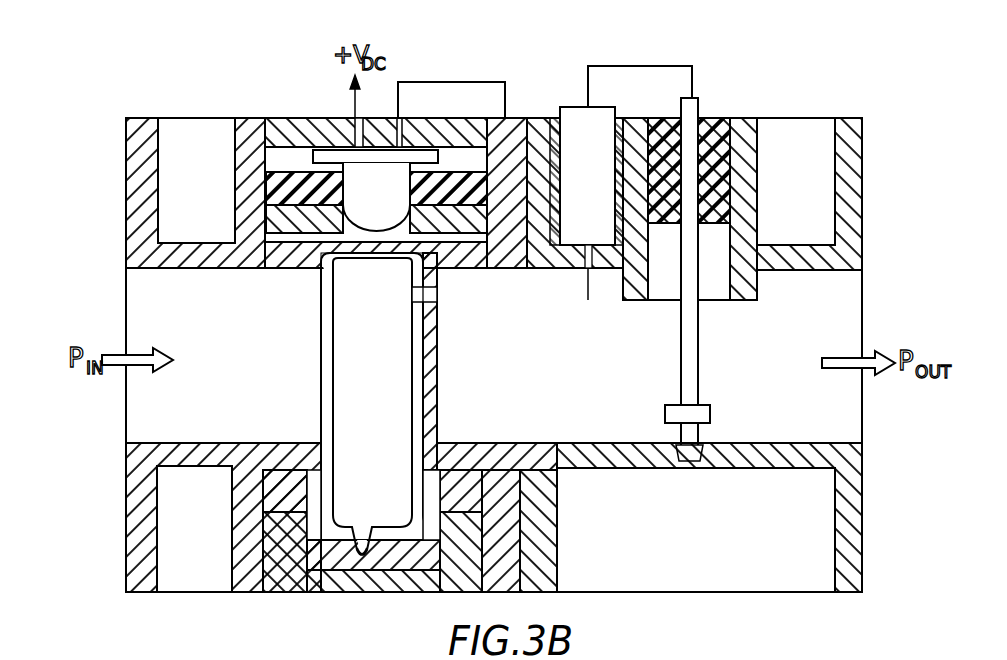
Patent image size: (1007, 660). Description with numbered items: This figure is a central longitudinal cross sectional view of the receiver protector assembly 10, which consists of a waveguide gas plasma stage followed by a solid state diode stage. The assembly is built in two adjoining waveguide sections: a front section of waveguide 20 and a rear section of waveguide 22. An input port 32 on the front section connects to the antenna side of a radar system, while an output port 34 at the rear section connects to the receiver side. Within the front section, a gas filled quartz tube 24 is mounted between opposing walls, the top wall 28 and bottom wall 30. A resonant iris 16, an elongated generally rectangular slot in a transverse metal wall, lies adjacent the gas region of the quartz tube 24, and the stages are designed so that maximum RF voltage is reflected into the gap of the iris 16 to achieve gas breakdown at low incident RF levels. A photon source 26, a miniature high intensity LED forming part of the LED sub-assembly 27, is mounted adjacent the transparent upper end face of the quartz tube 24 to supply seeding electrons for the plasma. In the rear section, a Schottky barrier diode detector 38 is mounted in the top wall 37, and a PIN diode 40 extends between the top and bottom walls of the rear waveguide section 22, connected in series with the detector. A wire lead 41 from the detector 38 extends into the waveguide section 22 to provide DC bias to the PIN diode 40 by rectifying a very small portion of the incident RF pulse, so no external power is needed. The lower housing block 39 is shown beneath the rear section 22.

The receiver protector assembly 10 is at (206, 90).
The resonant iris 16 is at (437, 295).
The front section of waveguide 20 is at (202, 467).
The rear section of waveguide 22 is at (736, 470).
The quartz tube 24 is at (330, 362).
The photon source 26 is at (373, 217).
The LED sub-assembly 27 is at (437, 102).
The top wall 28 is at (182, 262).
The bottom wall 30 is at (185, 443).
The input port 32 is at (125, 327).
The output port 34 is at (862, 320).
The top wall 37 is at (830, 272).
The Schottky barrier diode detector 38 is at (573, 112).
The lower right housing block 39 is at (832, 458).
The PIN diode 40 is at (678, 404).
The wire lead 41 is at (584, 292).